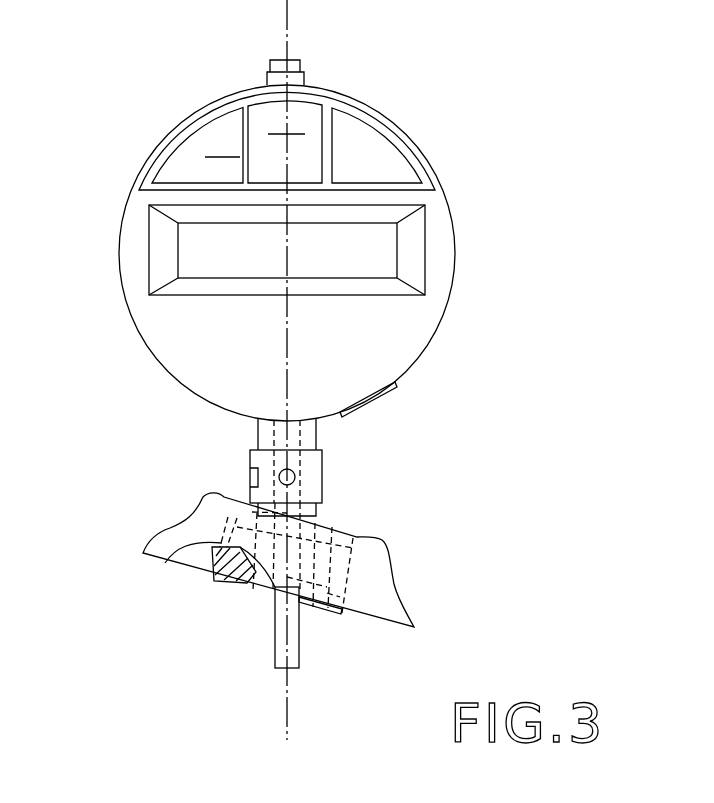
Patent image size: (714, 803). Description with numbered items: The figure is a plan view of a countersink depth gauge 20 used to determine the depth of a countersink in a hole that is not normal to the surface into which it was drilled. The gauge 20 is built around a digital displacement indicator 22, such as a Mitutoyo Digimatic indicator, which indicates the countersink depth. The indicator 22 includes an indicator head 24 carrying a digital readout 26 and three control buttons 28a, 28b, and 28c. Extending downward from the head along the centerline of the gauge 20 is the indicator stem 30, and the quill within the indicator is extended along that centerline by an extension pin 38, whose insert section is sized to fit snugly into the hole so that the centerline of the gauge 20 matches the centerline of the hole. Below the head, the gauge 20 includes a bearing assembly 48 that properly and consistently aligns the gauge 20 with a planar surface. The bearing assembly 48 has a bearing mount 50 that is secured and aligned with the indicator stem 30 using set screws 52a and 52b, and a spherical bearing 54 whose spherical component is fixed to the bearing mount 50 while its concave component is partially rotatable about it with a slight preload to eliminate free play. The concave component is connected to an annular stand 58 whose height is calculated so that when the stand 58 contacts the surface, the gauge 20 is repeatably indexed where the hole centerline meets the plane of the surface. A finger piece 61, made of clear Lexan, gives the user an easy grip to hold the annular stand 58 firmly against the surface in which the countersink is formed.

The countersink depth gauge 20 is at (543, 480).
The digital displacement indicator 22 is at (118, 162).
The indicator head 24 is at (353, 93).
The digital readout 26 is at (385, 245).
The control button 28a is at (172, 150).
The control button 28b is at (258, 108).
The control button 28c is at (378, 137).
The indicator stem 30 is at (258, 428).
The extension pin 38 is at (275, 642).
The bearing assembly 48 is at (355, 545).
The bearing mount 50 is at (323, 480).
The set screw 52a is at (250, 472).
The set screw 52b is at (294, 466).
The spherical bearing 54 is at (240, 580).
The annular stand 58 is at (333, 613).
The finger piece 61 is at (418, 616).